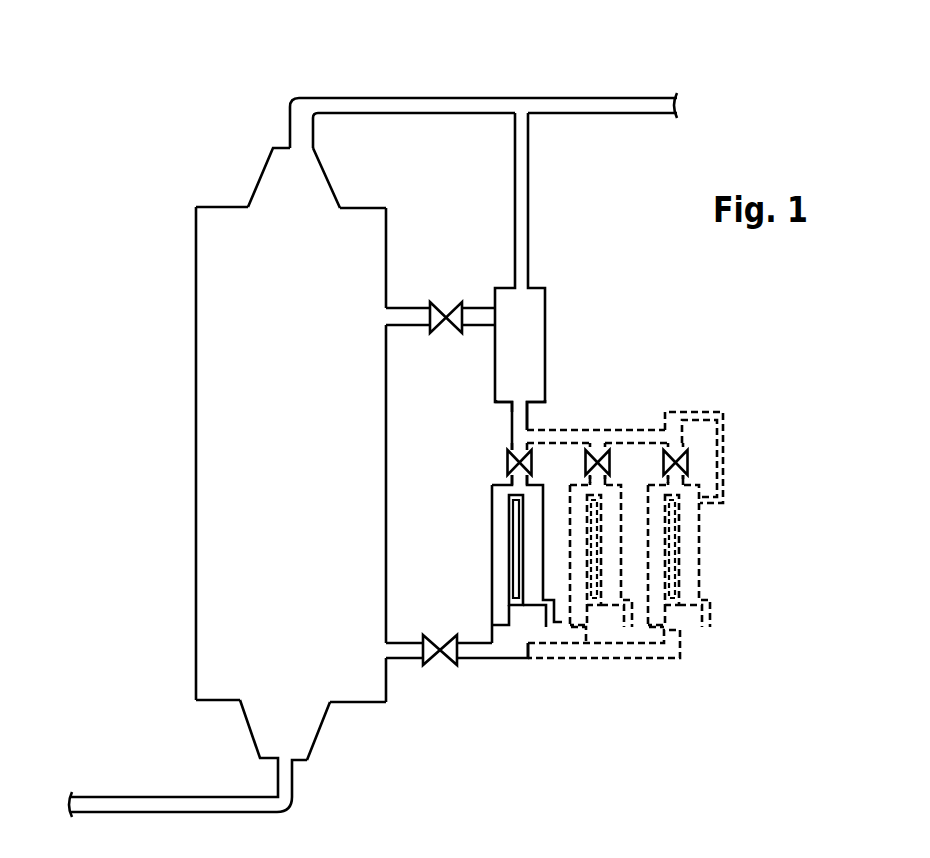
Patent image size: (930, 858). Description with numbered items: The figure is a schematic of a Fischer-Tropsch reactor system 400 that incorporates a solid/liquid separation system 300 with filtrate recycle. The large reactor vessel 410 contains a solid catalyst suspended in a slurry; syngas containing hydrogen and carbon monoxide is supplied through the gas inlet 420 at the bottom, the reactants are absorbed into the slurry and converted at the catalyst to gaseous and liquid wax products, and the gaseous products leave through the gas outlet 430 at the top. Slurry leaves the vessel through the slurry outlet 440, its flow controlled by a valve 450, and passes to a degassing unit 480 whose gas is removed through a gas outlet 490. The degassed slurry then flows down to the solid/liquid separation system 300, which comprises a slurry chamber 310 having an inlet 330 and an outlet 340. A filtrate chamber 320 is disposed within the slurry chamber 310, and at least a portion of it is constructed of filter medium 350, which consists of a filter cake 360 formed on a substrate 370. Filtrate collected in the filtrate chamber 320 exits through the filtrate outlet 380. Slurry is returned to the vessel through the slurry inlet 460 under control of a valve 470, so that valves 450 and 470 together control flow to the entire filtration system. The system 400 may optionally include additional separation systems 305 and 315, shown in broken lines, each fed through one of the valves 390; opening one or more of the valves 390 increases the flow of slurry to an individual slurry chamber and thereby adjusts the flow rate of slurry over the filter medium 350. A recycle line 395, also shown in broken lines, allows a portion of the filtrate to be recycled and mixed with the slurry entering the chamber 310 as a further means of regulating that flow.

The Fischer-Tropsch reactor system 400 is at (231, 118).
The reactor vessel 410 is at (312, 450).
The gas inlet 420 is at (252, 733).
The gas outlet 430 is at (331, 183).
The slurry outlet 440 is at (405, 308).
The valve 450 is at (437, 304).
The slurry inlet 460 is at (397, 658).
The valve 470 is at (431, 661).
The degassing unit 480 is at (546, 308).
The gas outlet 490 is at (633, 99).
The solid/liquid separation system 300 is at (478, 450).
The additional separation system 305 is at (628, 455).
The slurry chamber 310 is at (493, 488).
The additional separation system 315 is at (724, 520).
The filtrate chamber 320 is at (512, 511).
The inlet 330 is at (529, 413).
The outlet 340 is at (527, 642).
The filter medium 350 is at (516, 536).
The filter cake 360 is at (510, 570).
The substrate 370 is at (506, 604).
The filtrate outlet 380 is at (556, 621).
The valves 390 is at (592, 452).
The recycle line 395 is at (725, 430).